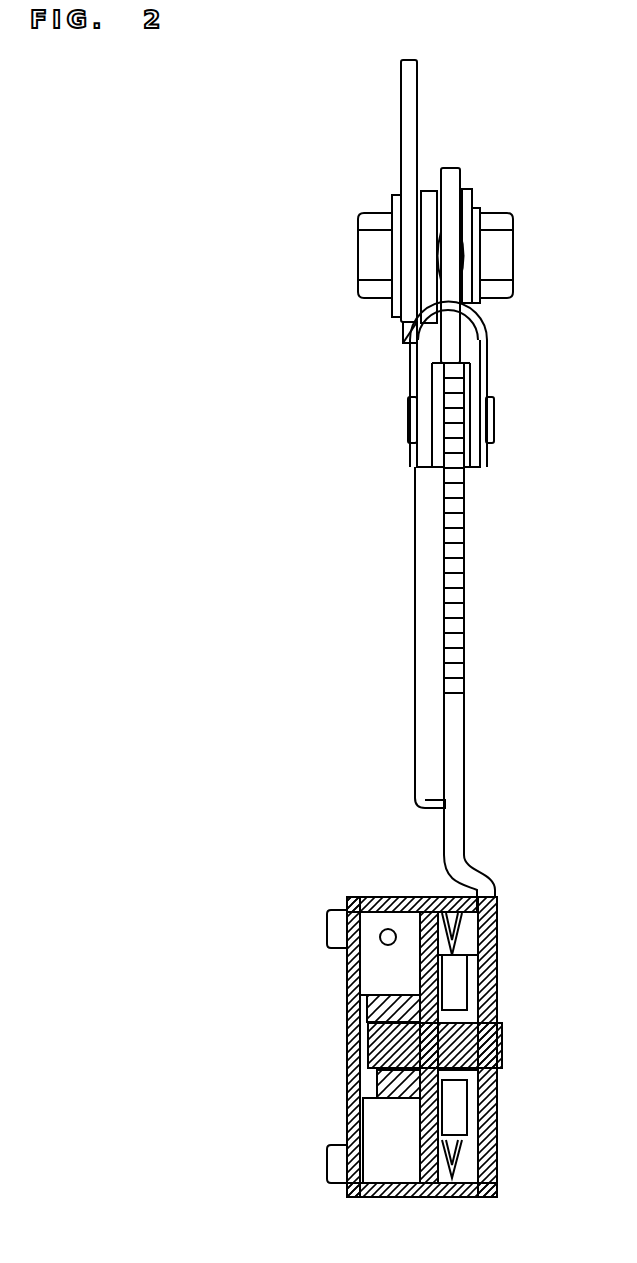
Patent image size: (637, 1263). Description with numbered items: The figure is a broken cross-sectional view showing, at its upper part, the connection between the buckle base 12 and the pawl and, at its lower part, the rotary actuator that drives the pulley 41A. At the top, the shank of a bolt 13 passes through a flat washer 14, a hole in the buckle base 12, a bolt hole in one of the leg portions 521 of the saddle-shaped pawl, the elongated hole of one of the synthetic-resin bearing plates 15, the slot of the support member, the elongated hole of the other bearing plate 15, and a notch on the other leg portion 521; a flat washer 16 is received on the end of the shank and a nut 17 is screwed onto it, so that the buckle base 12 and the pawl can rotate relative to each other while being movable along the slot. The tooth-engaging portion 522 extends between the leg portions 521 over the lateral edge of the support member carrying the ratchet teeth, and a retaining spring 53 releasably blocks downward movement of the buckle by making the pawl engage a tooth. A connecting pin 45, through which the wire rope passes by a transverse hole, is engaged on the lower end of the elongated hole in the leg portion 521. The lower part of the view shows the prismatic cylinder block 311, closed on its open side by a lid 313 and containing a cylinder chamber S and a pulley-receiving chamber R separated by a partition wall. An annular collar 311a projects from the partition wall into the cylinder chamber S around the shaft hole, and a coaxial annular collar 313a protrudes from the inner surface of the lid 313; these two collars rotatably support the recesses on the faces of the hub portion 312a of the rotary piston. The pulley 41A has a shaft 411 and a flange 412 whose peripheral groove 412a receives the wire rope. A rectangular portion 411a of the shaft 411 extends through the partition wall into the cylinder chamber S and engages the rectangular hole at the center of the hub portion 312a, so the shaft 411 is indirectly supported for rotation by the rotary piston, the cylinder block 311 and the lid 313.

The buckle base 12 is at (401, 98).
The bolt 13 is at (361, 258).
The flat washer 14 is at (393, 200).
The bearing plate 15 is at (436, 190).
The flat washer 16 is at (478, 210).
The nut 17 is at (500, 222).
The retaining spring 53 is at (463, 318).
The tooth-engaging portion 522 is at (403, 326).
The leg portions 521 is at (415, 455).
The connecting pin 45 is at (494, 418).
The cylinder block 311 is at (390, 897).
The pulley-receiving chamber R is at (497, 903).
The cylinder chamber S is at (383, 1185).
The flange 412 is at (460, 945).
The lid 313 is at (347, 958).
The annular collar 313a is at (380, 997).
The shaft 411 is at (502, 1040).
The rectangular portion 411a is at (368, 1036).
The hub portion 312a is at (377, 1100).
The annular collar 311a is at (397, 1100).
The pulley 41A is at (497, 1150).
The groove 412a is at (451, 1180).